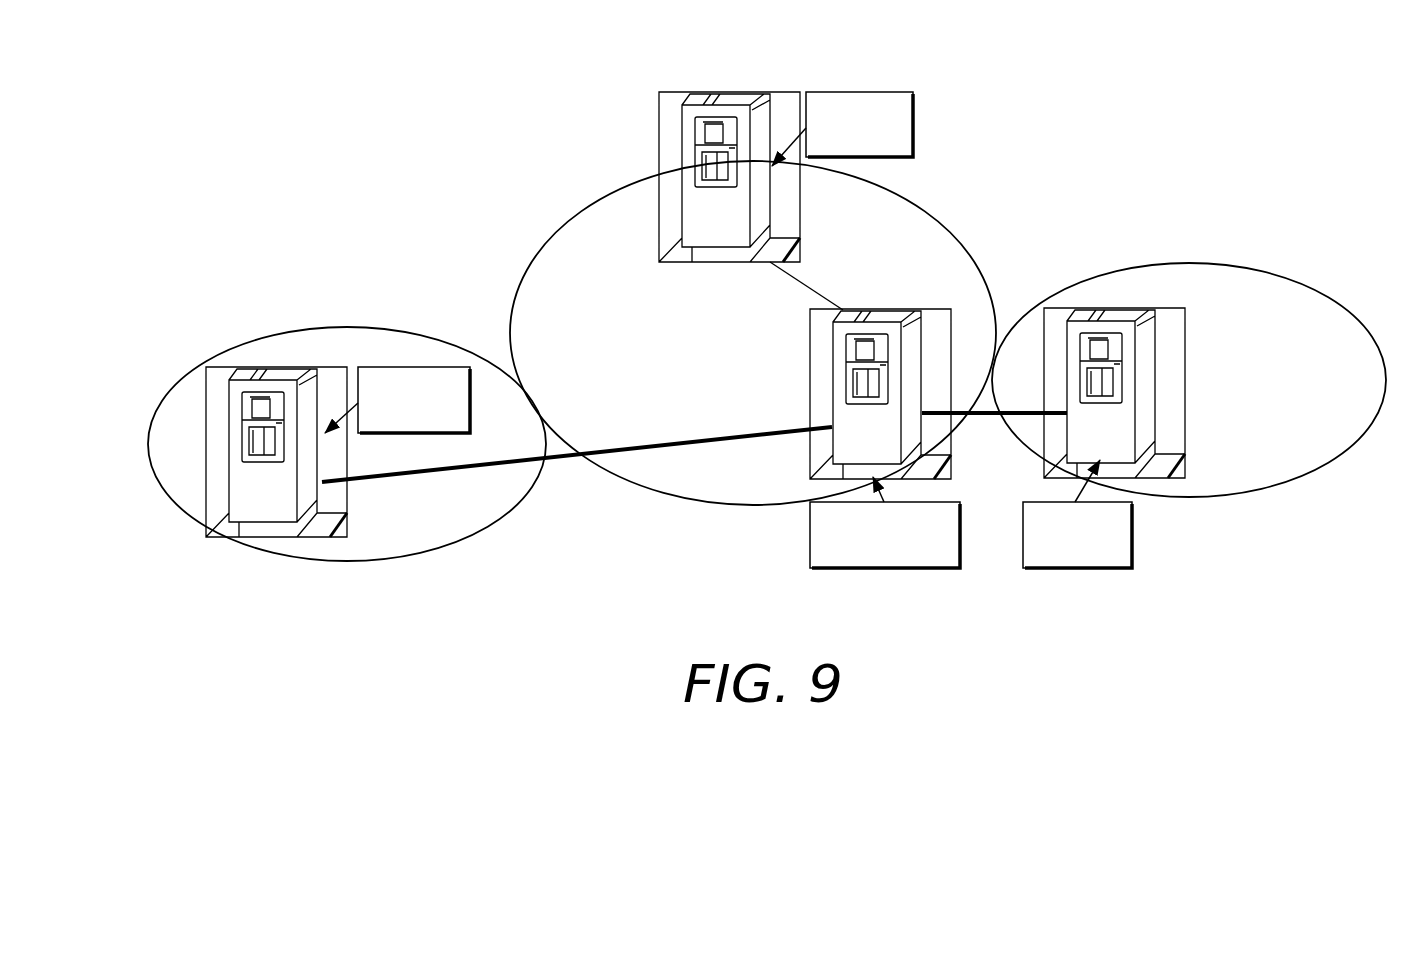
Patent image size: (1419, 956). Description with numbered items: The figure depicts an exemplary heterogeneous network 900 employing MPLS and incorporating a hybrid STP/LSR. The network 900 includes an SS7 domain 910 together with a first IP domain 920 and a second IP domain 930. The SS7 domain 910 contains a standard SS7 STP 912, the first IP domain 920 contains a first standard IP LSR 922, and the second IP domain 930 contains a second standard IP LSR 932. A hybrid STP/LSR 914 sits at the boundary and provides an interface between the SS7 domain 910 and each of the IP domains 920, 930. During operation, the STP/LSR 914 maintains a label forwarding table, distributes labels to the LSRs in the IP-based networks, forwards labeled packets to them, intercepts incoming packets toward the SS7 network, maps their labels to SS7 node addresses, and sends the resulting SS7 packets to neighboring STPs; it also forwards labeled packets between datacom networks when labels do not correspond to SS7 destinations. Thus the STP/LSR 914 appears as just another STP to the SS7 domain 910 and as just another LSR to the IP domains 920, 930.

The heterogeneous network 900 is at (1170, 670).
The SS7 domain 910 is at (945, 222).
The SS7 STP 912 is at (728, 92).
The hybrid STP/LSR 914 is at (877, 308).
The first IP domain 920 is at (240, 342).
The first IP LSR 922 is at (283, 367).
The second IP domain 930 is at (1332, 300).
The second IP LSR 932 is at (1113, 308).